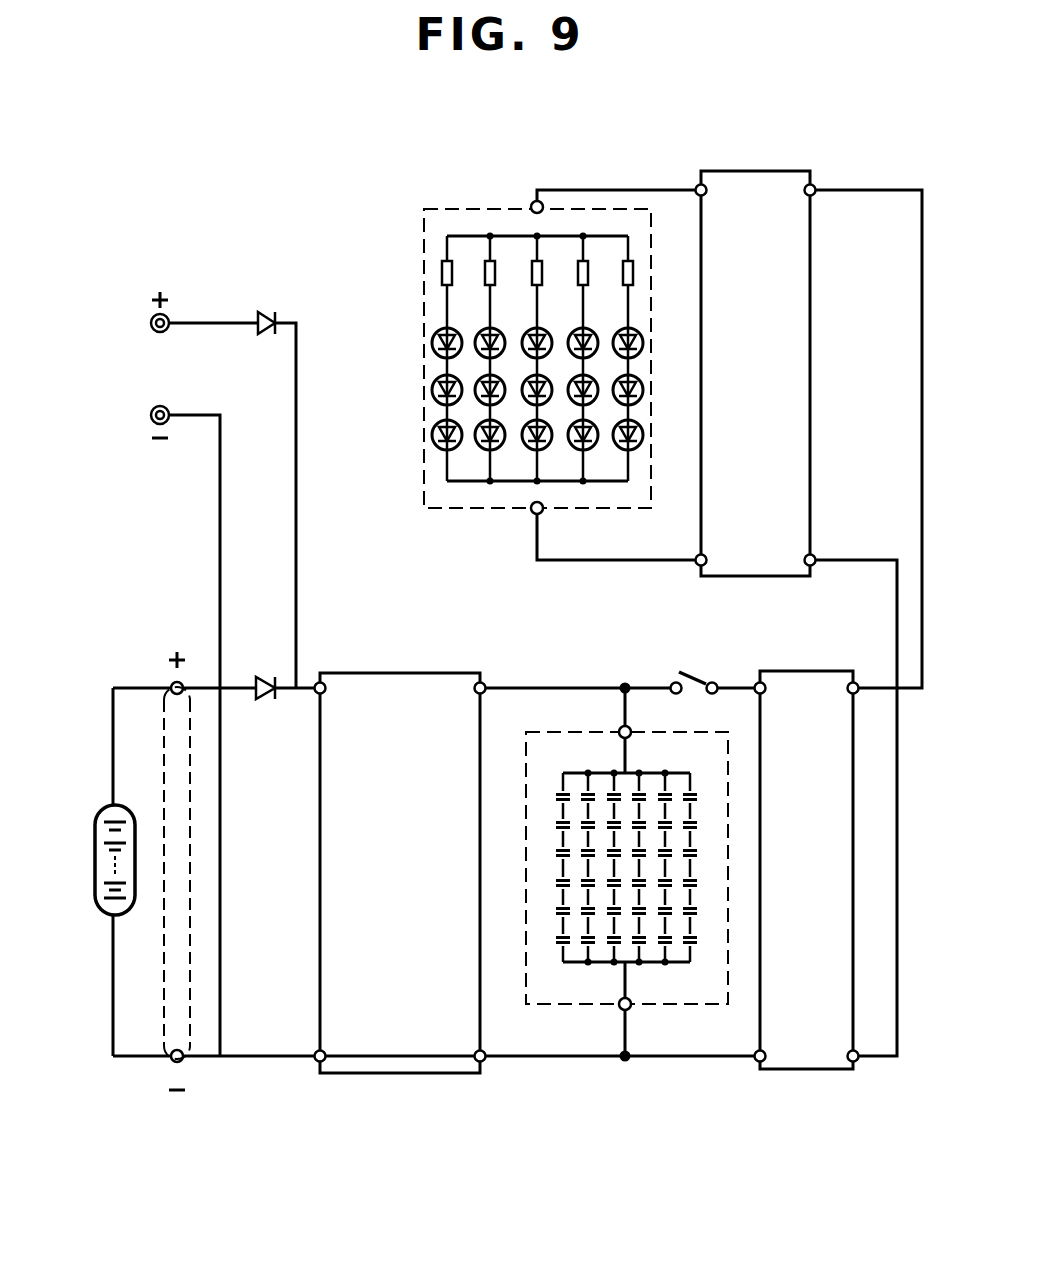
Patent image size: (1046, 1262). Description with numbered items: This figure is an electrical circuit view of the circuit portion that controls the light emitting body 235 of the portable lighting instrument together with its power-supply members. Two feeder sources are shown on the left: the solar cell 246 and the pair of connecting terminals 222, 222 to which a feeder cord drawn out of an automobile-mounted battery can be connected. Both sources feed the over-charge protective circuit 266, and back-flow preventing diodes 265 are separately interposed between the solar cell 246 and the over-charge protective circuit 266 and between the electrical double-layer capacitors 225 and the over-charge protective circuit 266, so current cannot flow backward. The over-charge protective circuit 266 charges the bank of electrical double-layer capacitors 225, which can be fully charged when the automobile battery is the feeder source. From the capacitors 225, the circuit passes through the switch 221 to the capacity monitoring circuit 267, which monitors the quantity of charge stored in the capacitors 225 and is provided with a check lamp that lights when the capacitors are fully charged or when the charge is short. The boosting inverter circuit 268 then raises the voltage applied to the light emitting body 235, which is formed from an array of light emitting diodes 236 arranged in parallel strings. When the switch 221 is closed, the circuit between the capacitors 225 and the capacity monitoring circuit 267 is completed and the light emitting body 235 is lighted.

The boosting inverter circuit 268 is at (750, 171).
The capacity monitoring circuit 267 is at (805, 671).
The over-charge protective circuit 266 is at (401, 673).
The switch 221 is at (697, 675).
The electrical double-layer capacitor 225 is at (598, 962).
The light emitting body 235 is at (507, 361).
The light emitting diode 236 is at (640, 331).
The connecting terminal 222 is at (165, 331).
The back-flow preventing diode 265 is at (258, 311).
The solar cell 246 is at (96, 811).